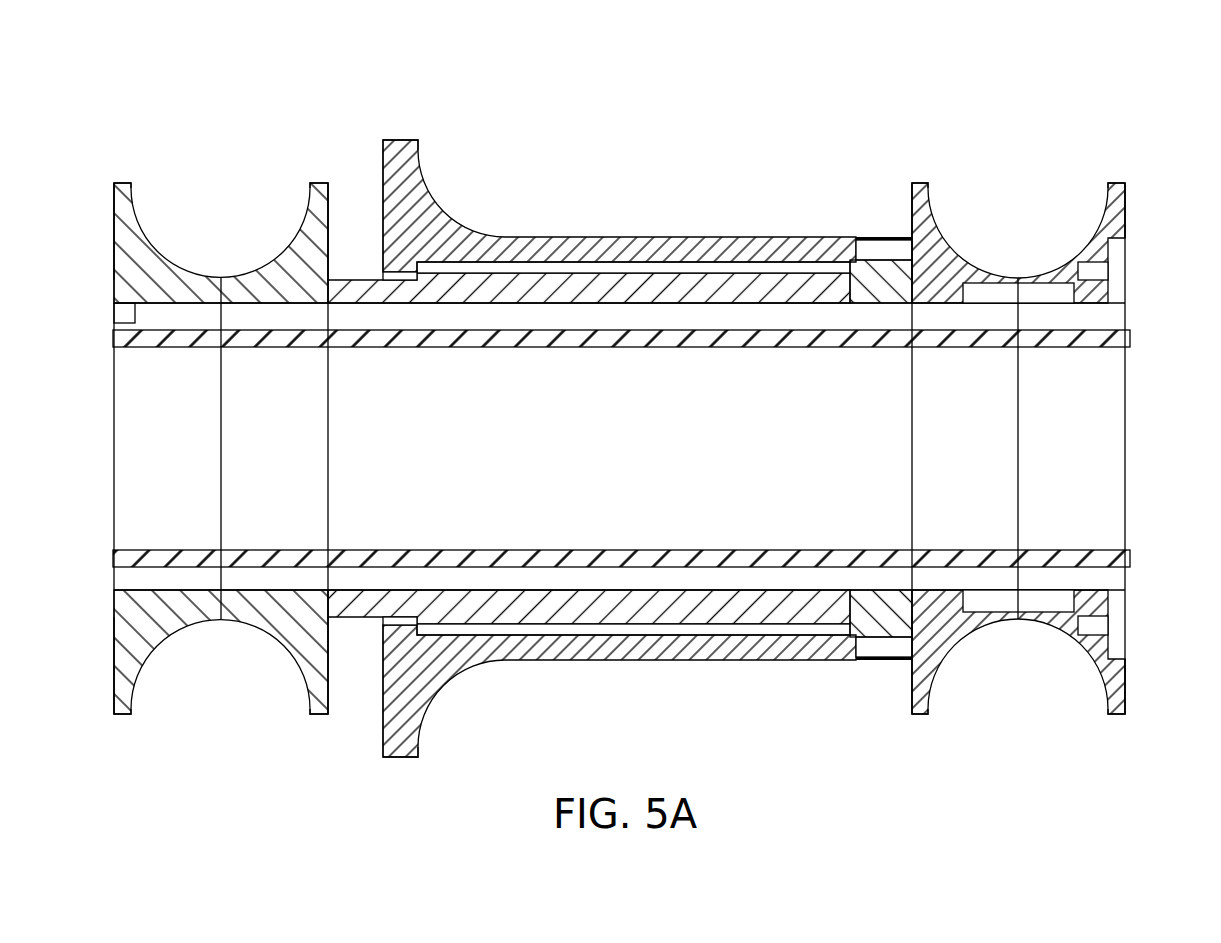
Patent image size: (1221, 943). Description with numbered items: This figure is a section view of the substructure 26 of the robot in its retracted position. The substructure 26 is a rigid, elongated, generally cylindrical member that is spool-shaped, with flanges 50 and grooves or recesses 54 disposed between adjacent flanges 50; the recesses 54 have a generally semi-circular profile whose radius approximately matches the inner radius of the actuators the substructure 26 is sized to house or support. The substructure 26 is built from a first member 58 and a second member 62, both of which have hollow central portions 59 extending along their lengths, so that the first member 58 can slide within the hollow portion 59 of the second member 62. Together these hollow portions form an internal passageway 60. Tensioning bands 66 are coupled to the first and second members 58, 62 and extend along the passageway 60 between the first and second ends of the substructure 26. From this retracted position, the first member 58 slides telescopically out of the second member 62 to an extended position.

The substructure 26 is at (124, 78).
The flanges 50 is at (120, 183).
The grooves or recesses 54 is at (220, 265).
The first member 58 is at (148, 278).
The hollow central portions 59 is at (152, 416).
The internal passageway 60 is at (152, 481).
The second member 62 is at (604, 237).
The tensioning bands 66 is at (622, 348).